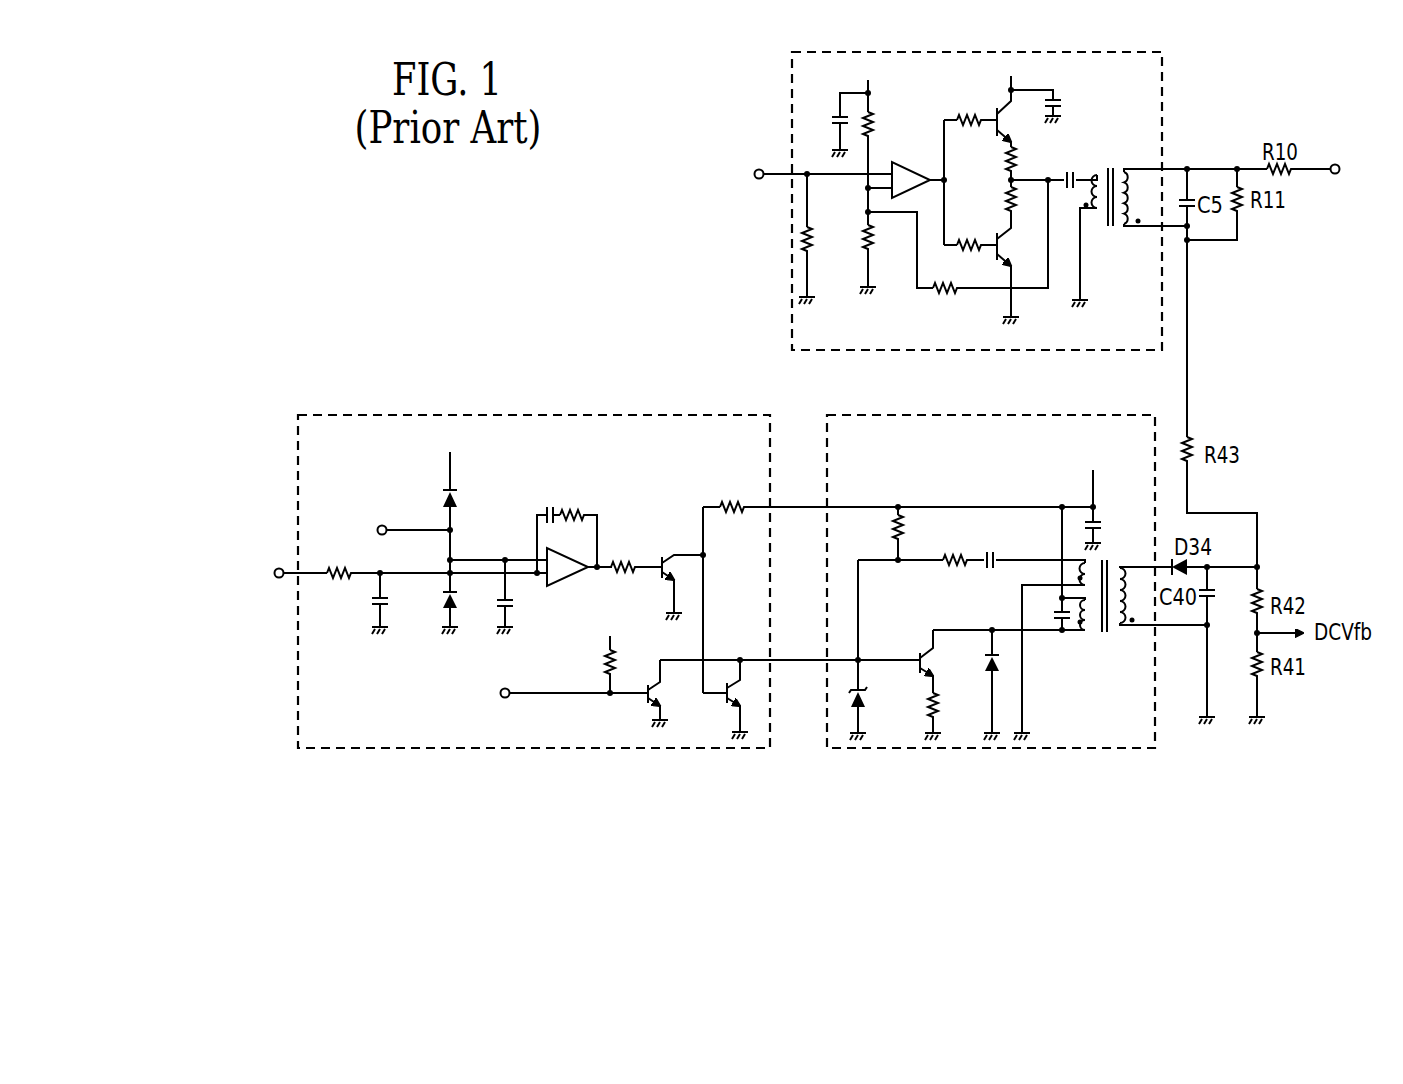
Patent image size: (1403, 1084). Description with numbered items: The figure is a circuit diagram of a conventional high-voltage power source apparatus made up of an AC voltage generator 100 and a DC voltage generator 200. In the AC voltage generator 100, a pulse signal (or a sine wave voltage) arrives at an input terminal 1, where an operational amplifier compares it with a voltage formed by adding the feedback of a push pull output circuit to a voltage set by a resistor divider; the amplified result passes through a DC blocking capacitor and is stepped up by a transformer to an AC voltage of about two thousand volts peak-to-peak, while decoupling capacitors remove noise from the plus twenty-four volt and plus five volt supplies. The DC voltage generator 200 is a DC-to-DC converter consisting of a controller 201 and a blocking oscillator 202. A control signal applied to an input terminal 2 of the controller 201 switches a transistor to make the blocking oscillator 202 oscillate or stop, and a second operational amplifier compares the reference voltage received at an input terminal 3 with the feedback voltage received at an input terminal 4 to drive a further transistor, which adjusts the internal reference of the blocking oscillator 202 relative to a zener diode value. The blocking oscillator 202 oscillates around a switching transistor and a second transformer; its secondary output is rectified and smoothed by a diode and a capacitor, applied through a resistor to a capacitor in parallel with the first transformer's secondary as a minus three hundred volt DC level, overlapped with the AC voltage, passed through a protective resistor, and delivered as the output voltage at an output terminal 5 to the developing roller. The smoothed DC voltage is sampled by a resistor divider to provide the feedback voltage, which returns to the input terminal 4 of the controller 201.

The input terminal 1 is at (759, 168).
The input terminal 2 is at (508, 699).
The input terminal 3 is at (279, 567).
The input terminal 4 is at (384, 524).
The output terminal 5 is at (1336, 164).
The AC voltage generator 100 is at (1162, 85).
The DC voltage generator 200 is at (835, 812).
The controller 201 is at (723, 750).
The blocking oscillator 202 is at (840, 750).